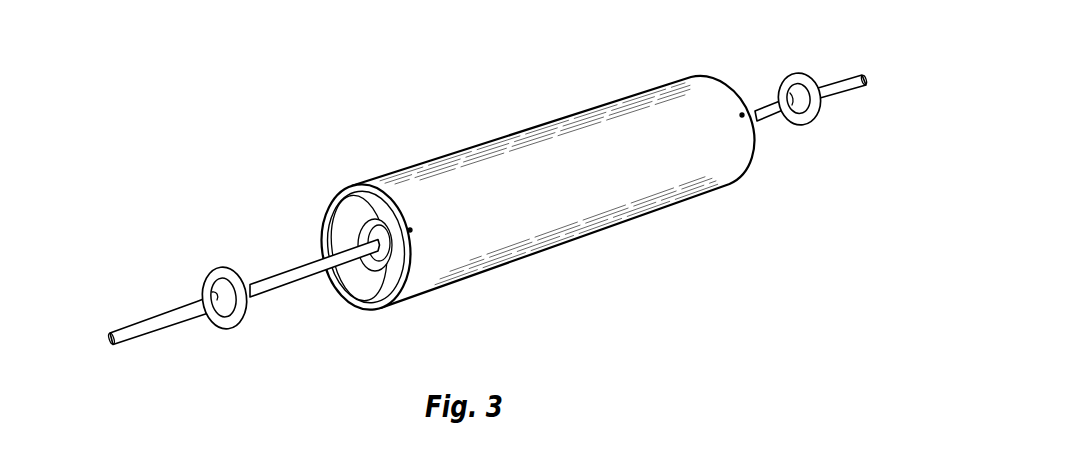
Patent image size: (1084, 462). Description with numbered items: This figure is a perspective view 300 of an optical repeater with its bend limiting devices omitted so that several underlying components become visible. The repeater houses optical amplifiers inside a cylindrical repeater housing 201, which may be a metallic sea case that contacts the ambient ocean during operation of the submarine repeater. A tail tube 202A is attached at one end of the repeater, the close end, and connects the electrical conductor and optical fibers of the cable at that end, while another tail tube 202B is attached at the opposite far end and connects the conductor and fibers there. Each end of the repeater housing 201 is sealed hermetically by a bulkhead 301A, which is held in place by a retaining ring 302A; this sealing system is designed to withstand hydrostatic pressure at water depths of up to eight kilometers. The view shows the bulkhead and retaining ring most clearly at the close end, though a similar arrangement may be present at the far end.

The perspective view 300 is at (483, 47).
The repeater housing 201 is at (515, 133).
The tail tube 202A is at (166, 320).
The tail tube 202B is at (851, 86).
The bulkhead 301A is at (341, 216).
The retaining ring 302A is at (329, 256).